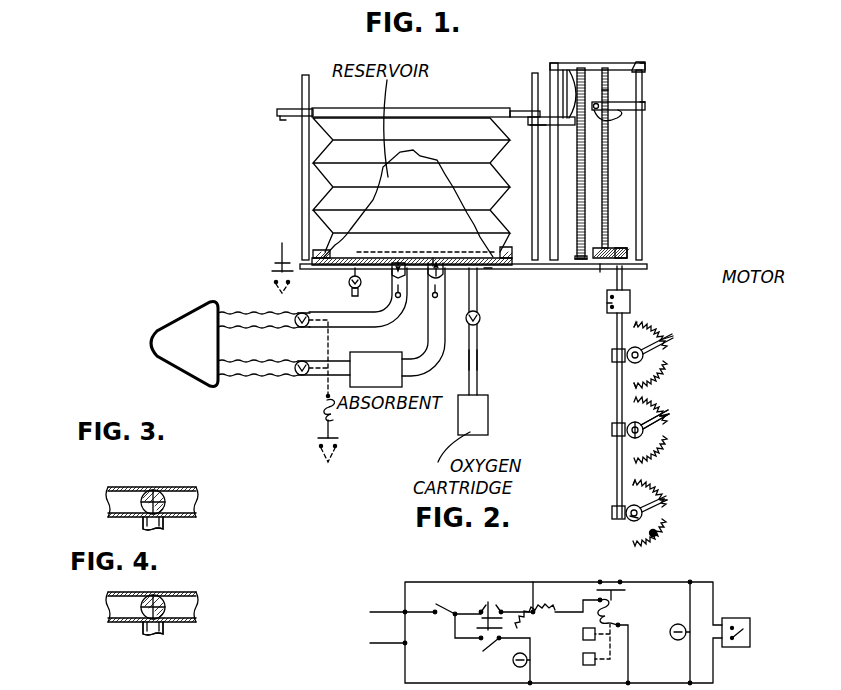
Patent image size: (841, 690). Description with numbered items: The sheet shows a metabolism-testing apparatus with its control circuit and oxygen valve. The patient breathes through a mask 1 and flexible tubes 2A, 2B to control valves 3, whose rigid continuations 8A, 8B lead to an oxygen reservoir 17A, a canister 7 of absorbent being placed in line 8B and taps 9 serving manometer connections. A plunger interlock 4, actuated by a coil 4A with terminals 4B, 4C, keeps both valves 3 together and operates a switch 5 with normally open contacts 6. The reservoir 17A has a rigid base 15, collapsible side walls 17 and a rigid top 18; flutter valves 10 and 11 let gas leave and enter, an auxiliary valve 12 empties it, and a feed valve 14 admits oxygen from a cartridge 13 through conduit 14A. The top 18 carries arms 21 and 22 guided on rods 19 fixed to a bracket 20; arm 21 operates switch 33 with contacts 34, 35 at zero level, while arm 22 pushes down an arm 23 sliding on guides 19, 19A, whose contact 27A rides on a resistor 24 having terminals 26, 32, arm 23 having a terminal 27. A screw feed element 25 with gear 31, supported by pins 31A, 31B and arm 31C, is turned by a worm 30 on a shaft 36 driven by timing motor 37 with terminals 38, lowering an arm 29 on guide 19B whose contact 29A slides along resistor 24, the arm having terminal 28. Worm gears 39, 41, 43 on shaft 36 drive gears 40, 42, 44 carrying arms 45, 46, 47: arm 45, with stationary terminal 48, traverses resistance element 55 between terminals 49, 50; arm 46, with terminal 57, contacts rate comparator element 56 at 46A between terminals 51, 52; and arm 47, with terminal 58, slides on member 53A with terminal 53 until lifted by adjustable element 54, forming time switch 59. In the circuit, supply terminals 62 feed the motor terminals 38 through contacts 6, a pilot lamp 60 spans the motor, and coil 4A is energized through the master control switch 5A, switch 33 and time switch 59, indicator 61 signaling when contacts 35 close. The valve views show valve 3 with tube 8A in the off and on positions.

In FIG. 1, the mask 1 is at (169, 333).
In FIG. 1, the flexible tube 2A is at (226, 316).
In FIG. 1, the flexible tube 2B is at (246, 378).
In FIG. 1, the control valves 3 is at (290, 362).
In FIG. 2, the control valves 3 is at (583, 659).
In FIG. 3, the control valves 3 is at (160, 492).
In FIG. 4, the control valves 3 is at (165, 598).
In FIG. 1, the interlocking device 4 is at (337, 417).
In FIG. 1, the coil 4A is at (325, 408).
In FIG. 2, the coil 4A is at (612, 606).
In FIG. 1, the coil terminal 4B is at (340, 428).
In FIG. 2, the coil terminal 4B is at (600, 581).
In FIG. 1, the coil terminal 4C is at (322, 397).
In FIG. 2, the coil terminal 4C is at (620, 625).
In FIG. 1, the switch 5 is at (346, 452).
In FIG. 2, the switch 5 is at (621, 581).
In FIG. 2, the master control switch 5A is at (442, 594).
In FIG. 1, the contacts 6 is at (330, 456).
In FIG. 2, the contacts 6 is at (611, 588).
In FIG. 1, the canister 7 is at (352, 390).
In FIG. 1, the rigid tube 8A is at (390, 314).
In FIG. 3, the rigid tube 8A is at (185, 492).
In FIG. 4, the rigid tube 8A is at (190, 598).
In FIG. 1, the rigid tube 8B is at (430, 336).
In FIG. 1, the taps 9 is at (403, 298).
In FIG. 1, the flutter valve 10 is at (397, 262).
In FIG. 1, the flutter valve 11 is at (438, 262).
In FIG. 1, the auxiliary valve 12 is at (348, 282).
In FIG. 1, the cartridge 13 is at (488, 414).
In FIG. 1, the feed valve 14 is at (481, 318).
In FIG. 1, the conduit 14A is at (478, 361).
In FIG. 1, the base 15 is at (488, 269).
In FIG. 1, the side walls 17 is at (330, 152).
In FIG. 1, the oxygen reservoir 17A is at (408, 204).
In FIG. 1, the top 18 is at (393, 112).
In FIG. 1, the guide rods 19 is at (309, 95).
In FIG. 1, the guide 19A is at (550, 68).
In FIG. 1, the guide 19B is at (643, 147).
In FIG. 1, the bracket 20 is at (322, 270).
In FIG. 1, the arm 21 is at (282, 109).
In FIG. 1, the arm 22 is at (530, 113).
In FIG. 1, the arm 23 is at (538, 126).
In FIG. 1, the resistor 24 is at (583, 72).
In FIG. 1, the screw feed element 25 is at (644, 62).
In FIG. 1, the terminal 26 is at (606, 72).
In FIG. 1, the terminal 27 is at (564, 90).
In FIG. 1, the contact 27A is at (576, 93).
In FIG. 1, the terminal 28 is at (647, 110).
In FIG. 1, the arm 29 is at (647, 102).
In FIG. 1, the contact 29A is at (622, 118).
In FIG. 1, the worm 30 is at (628, 252).
In FIG. 1, the gear 31 is at (609, 248).
In FIG. 1, the pin 31A is at (600, 266).
In FIG. 1, the pin 31B is at (609, 90).
In FIG. 1, the arm 31C is at (647, 65).
In FIG. 1, the terminal 32 is at (582, 262).
In FIG. 1, the switch 33 is at (251, 250).
In FIG. 2, the switch 33 is at (489, 600).
In FIG. 1, the contacts 34 is at (284, 250).
In FIG. 2, the contacts 34 is at (480, 610).
In FIG. 1, the contacts 35 is at (283, 295).
In FIG. 2, the contacts 35 is at (483, 650).
In FIG. 1, the shaft 36 is at (625, 280).
In FIG. 1, the timing motor 37 is at (630, 298).
In FIG. 2, the timing motor 37 is at (752, 633).
In FIG. 1, the motor terminals 38 is at (607, 306).
In FIG. 2, the motor terminals 38 is at (742, 647).
In FIG. 1, the worm gear 39 is at (611, 356).
In FIG. 1, the gear 40 is at (662, 368).
In FIG. 1, the worm gear 41 is at (611, 430).
In FIG. 1, the gear 42 is at (630, 427).
In FIG. 1, the worm gear 43 is at (611, 510).
In FIG. 1, the gear 44 is at (658, 522).
In FIG. 1, the contact arm 45 is at (650, 348).
In FIG. 1, the contact arm 46 is at (655, 440).
In FIG. 1, the sliding contact 46A is at (655, 428).
In FIG. 1, the arm 47 is at (655, 504).
In FIG. 1, the stationary terminal 48 is at (650, 330).
In FIG. 1, the terminal 49 is at (644, 324).
In FIG. 1, the terminal 50 is at (647, 389).
In FIG. 1, the end terminal 51 is at (640, 400).
In FIG. 1, the end terminal 52 is at (642, 462).
In FIG. 1, the terminal 53 is at (623, 488).
In FIG. 2, the terminal 53 is at (578, 601).
In FIG. 1, the current-conducting member 53A is at (652, 490).
In FIG. 1, the contact-lifting element 54 is at (657, 534).
In FIG. 1, the variable resistor element 55 is at (672, 344).
In FIG. 1, the rate comparator element 56 is at (672, 423).
In FIG. 1, the fixed terminal 57 is at (660, 418).
In FIG. 1, the stationary terminal 58 is at (631, 516).
In FIG. 2, the stationary terminal 58 is at (533, 608).
In FIG. 1, the time switch 59 is at (672, 516).
In FIG. 2, the time switch 59 is at (546, 604).
In FIG. 2, the pilot lamp 60 is at (672, 640).
In FIG. 2, the indicator 61 is at (512, 663).
In FIG. 2, the current supply terminals 62 is at (370, 640).